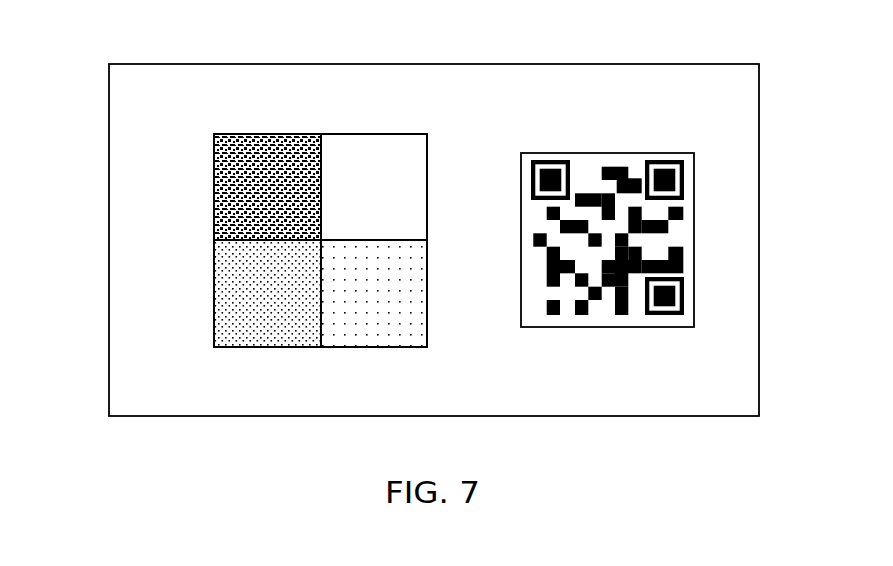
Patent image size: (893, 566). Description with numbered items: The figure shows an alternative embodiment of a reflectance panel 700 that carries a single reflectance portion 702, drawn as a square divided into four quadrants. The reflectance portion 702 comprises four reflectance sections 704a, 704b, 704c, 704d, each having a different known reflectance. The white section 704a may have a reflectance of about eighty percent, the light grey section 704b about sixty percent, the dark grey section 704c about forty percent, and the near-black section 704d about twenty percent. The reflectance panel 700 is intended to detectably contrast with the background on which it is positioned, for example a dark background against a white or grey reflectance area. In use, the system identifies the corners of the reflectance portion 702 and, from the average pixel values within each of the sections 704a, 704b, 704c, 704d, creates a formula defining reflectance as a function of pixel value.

The reflectance panel 700 is at (660, 64).
The reflectance portion 702 is at (257, 96).
The reflectance section 704a is at (375, 134).
The reflectance section 704b is at (377, 347).
The reflectance section 704c is at (213, 293).
The reflectance section 704d is at (213, 188).